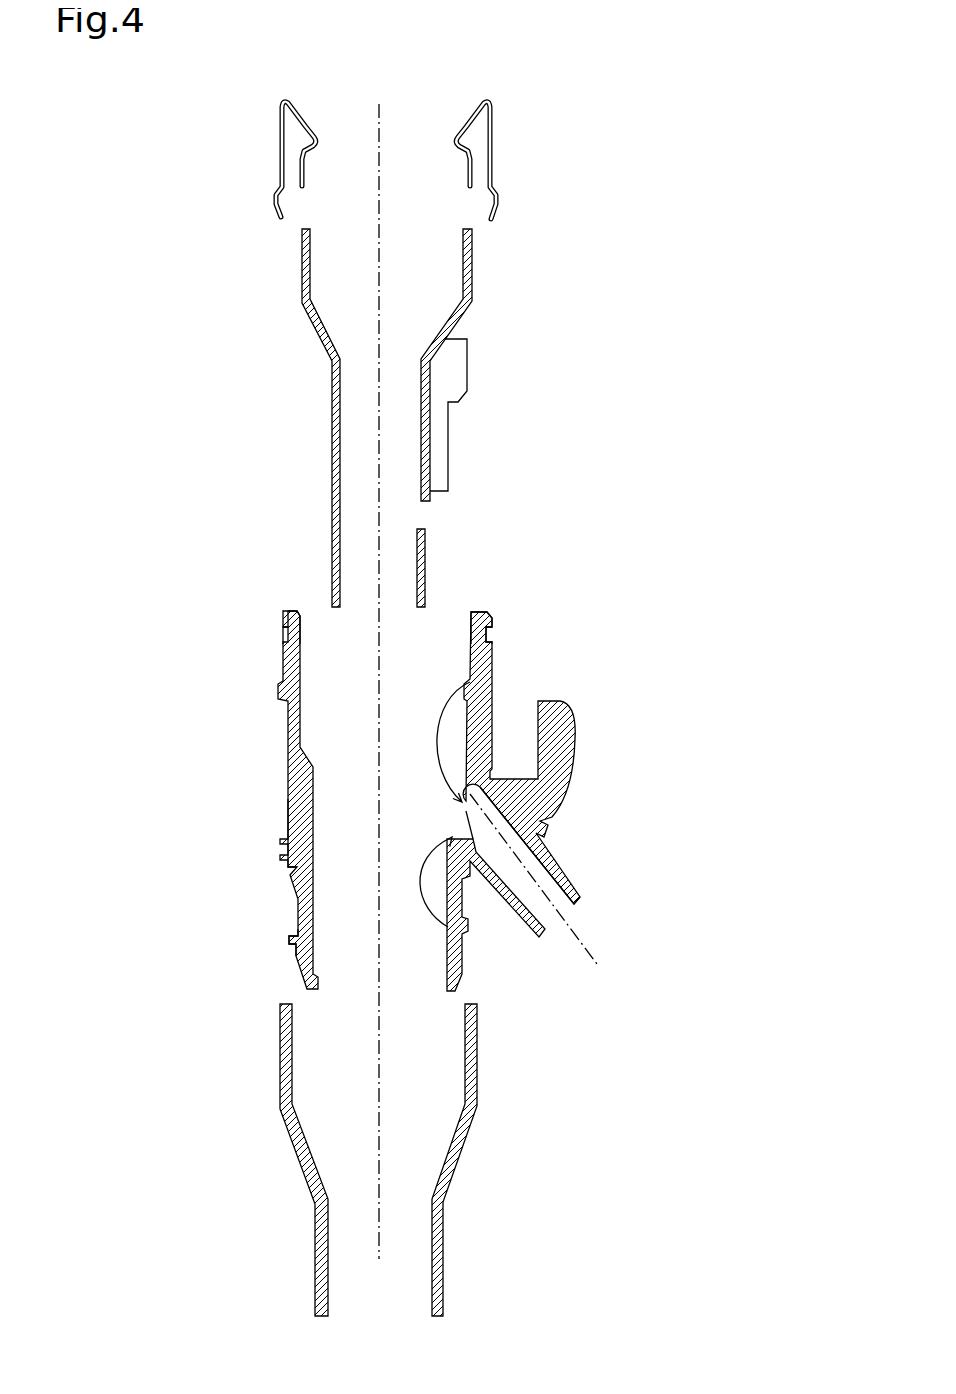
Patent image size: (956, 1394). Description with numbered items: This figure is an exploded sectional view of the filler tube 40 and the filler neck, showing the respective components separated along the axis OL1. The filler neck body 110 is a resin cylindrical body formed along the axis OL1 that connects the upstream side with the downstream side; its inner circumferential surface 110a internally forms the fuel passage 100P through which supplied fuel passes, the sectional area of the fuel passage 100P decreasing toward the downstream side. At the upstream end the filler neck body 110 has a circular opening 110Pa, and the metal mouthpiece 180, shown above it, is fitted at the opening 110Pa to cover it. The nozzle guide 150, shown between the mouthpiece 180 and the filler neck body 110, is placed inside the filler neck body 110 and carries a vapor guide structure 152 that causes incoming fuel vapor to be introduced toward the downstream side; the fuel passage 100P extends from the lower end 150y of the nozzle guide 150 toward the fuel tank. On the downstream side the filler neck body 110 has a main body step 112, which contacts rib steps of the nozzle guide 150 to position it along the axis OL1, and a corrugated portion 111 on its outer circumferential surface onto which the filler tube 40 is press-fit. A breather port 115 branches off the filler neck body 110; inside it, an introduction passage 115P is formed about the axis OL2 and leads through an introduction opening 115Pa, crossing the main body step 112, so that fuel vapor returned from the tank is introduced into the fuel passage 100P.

The filler tube 40 is at (258, 1038).
The fuel passage 100P is at (430, 785).
The filler neck body 110 is at (251, 783).
The opening 110Pa is at (322, 614).
The inner circumferential surface 110a is at (312, 826).
The corrugated portion 111 is at (298, 952).
The main body step 112 is at (462, 930).
The breather port 115 is at (554, 807).
The introduction passage 115P is at (567, 918).
The introduction opening 115Pa is at (485, 692).
The nozzle guide 150 is at (442, 424).
The lower end 150y is at (408, 621).
The vapor guide structure 152 is at (455, 341).
The mouthpiece 180 is at (526, 154).
The axis OL1 is at (378, 665).
The axis OL2 is at (553, 898).